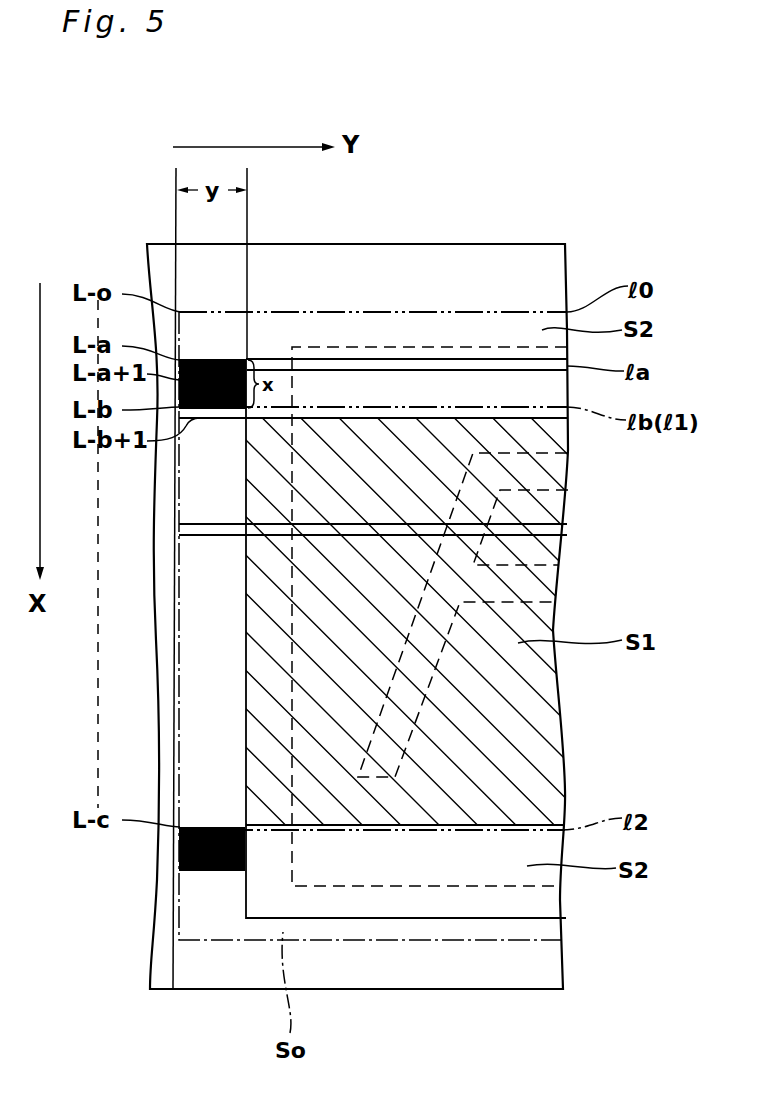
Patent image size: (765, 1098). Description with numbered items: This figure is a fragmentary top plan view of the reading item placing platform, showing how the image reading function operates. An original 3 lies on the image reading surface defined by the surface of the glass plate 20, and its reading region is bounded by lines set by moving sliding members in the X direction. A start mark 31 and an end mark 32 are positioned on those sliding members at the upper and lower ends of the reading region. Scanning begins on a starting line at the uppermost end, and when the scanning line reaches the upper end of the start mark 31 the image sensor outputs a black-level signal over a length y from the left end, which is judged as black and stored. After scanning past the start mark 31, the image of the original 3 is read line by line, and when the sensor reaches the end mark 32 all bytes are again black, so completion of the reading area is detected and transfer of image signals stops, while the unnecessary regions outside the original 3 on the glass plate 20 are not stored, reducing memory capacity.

The glass plate 20 is at (401, 997).
The original 3 is at (502, 928).
The start mark 31 is at (216, 348).
The end mark 32 is at (198, 880).